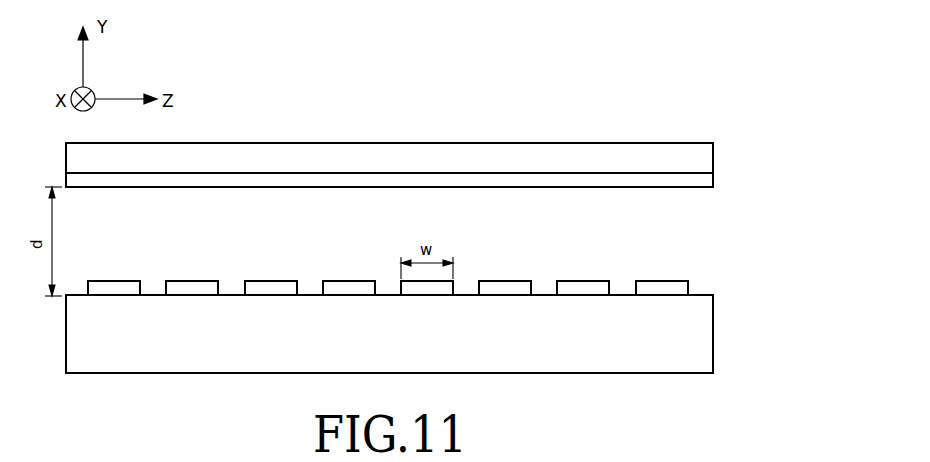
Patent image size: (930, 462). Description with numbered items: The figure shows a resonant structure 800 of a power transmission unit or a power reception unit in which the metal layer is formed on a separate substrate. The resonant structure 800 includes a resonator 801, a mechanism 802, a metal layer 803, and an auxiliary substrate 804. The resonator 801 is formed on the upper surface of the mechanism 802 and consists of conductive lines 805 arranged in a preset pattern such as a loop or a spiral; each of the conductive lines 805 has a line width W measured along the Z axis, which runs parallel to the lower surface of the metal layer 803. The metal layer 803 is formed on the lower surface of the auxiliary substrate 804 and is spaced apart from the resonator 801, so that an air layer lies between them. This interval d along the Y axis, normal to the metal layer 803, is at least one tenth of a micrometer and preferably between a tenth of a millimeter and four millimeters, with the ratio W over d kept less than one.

The resonant structure 800 is at (716, 117).
The resonator 801 is at (660, 285).
The mechanism 802 is at (703, 338).
The metal layer 803 is at (703, 181).
The auxiliary substrate 804 is at (703, 156).
The conductive lines 805 is at (494, 270).